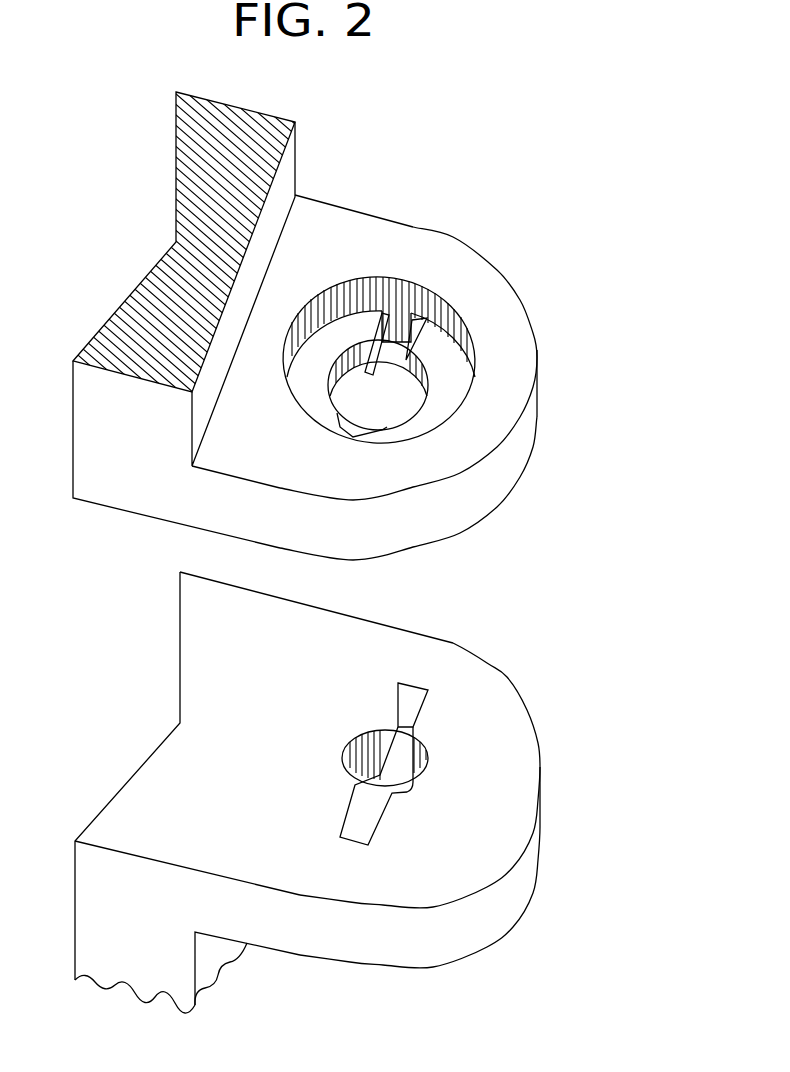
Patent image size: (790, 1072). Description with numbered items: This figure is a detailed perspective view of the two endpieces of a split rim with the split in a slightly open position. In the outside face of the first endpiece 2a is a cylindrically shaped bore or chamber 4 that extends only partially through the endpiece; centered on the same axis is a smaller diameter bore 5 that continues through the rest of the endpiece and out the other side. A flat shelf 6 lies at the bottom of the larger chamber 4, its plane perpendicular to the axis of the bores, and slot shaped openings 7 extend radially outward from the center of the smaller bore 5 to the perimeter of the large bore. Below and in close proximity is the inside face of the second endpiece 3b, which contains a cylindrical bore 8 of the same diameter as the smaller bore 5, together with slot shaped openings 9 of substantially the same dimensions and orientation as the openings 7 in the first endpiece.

The first endpiece 2a is at (368, 245).
The cylindrically shaped bore or chamber 4 is at (402, 298).
The smaller diameter bore 5 is at (398, 370).
The flat shelf 6 is at (447, 390).
The slot shaped openings 7 is at (386, 362).
The cylindrical bore 8 is at (358, 733).
The slot shaped openings 9 is at (365, 825).
The second endpiece 3b is at (435, 853).